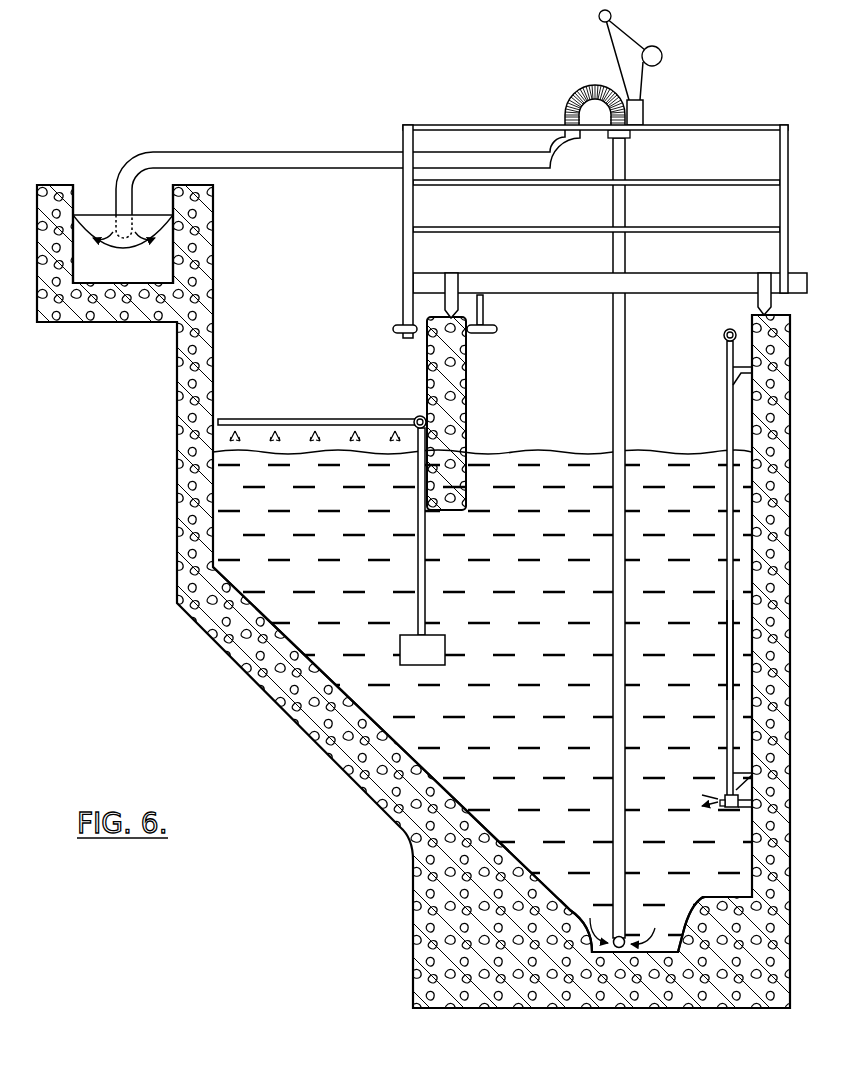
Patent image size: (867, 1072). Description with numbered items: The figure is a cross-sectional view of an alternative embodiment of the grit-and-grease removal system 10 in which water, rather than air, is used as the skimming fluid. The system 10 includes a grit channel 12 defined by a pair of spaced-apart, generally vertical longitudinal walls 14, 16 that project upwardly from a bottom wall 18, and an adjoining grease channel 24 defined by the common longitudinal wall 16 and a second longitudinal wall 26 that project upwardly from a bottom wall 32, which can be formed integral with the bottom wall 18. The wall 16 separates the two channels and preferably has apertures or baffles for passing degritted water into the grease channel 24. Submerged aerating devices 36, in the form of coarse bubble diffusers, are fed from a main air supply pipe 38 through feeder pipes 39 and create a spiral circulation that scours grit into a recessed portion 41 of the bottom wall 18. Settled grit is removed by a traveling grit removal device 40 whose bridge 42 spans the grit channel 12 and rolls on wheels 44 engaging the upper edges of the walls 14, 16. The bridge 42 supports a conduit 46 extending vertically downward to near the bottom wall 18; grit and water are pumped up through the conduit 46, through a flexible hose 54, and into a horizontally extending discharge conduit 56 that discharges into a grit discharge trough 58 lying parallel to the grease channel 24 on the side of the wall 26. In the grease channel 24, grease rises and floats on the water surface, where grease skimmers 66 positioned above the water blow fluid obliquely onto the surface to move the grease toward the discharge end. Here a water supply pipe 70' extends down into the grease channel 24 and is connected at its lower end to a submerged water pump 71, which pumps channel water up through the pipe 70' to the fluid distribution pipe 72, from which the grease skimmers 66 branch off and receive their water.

The grit-and-grease removal system 10 is at (82, 150).
The grit channel 12 is at (706, 312).
The longitudinal wall 14 is at (735, 418).
The longitudinal wall 16 is at (466, 378).
The bottom wall 18 is at (550, 895).
The grease channel 24 is at (312, 194).
The second longitudinal wall 26 is at (213, 278).
The bottom wall 32 is at (345, 697).
The aerating devices 36 is at (729, 792).
The main air supply pipe 38 is at (724, 340).
The feeder pipes 39 is at (728, 628).
The traveling grit removal device 40 is at (708, 102).
The recessed portion 41 is at (663, 950).
The bridge 42 is at (406, 265).
The wheels 44 is at (452, 296).
The conduit 46 is at (612, 426).
The flexible hose 54 is at (583, 95).
The discharge conduit 56 is at (356, 158).
The grit discharge trough 58 is at (105, 192).
The grease skimmers 66 is at (256, 420).
The water supply pipe 70' is at (470, 531).
The submerged water pump 71 is at (447, 648).
The fluid distribution pipe 72 is at (418, 418).